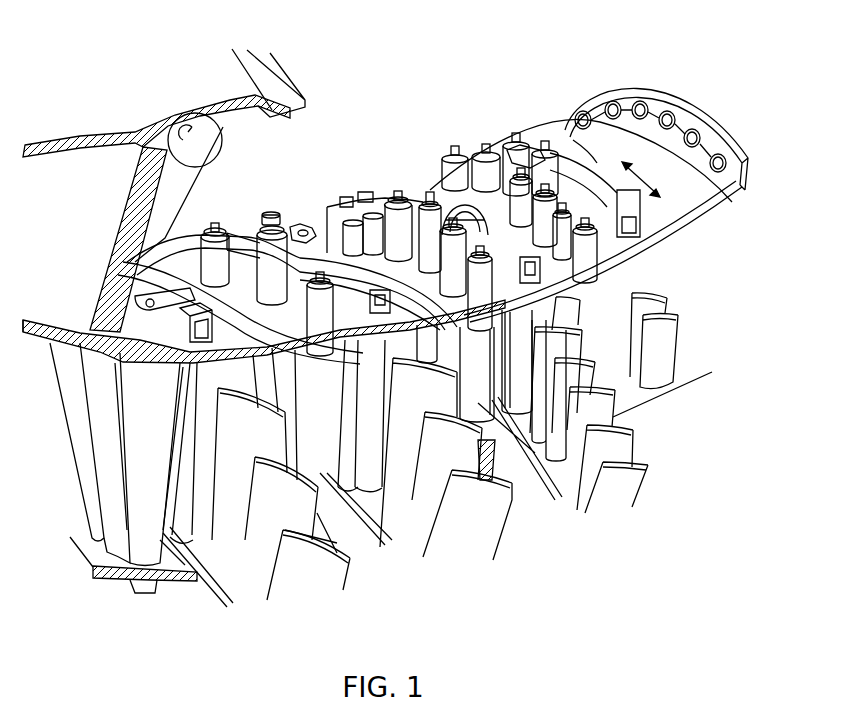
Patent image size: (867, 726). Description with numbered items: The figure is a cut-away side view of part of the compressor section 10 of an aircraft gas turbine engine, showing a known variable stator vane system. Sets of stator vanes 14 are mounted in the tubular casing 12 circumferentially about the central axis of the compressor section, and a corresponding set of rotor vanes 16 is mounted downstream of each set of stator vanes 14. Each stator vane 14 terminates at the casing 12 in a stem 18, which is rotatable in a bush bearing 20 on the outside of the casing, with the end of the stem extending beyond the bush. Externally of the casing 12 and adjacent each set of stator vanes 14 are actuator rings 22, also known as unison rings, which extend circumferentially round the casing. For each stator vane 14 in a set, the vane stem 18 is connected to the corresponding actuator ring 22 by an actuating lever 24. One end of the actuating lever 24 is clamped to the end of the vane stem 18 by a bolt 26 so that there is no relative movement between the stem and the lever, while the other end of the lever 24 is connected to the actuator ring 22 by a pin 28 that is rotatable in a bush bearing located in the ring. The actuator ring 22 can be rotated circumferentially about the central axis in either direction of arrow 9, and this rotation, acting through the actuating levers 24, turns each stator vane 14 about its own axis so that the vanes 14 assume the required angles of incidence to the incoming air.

The compressor section 10 is at (403, 79).
The tubular casing 12 is at (693, 197).
The stator vanes 14 is at (583, 307).
The rotor vanes 16 is at (663, 343).
The stem 18 is at (457, 197).
The bush bearing 20 is at (420, 205).
The actuator ring 22 is at (337, 240).
The actuating lever 24 is at (297, 227).
The bolt 26 is at (267, 227).
The pin 28 is at (303, 227).
The arrow 9 is at (647, 175).